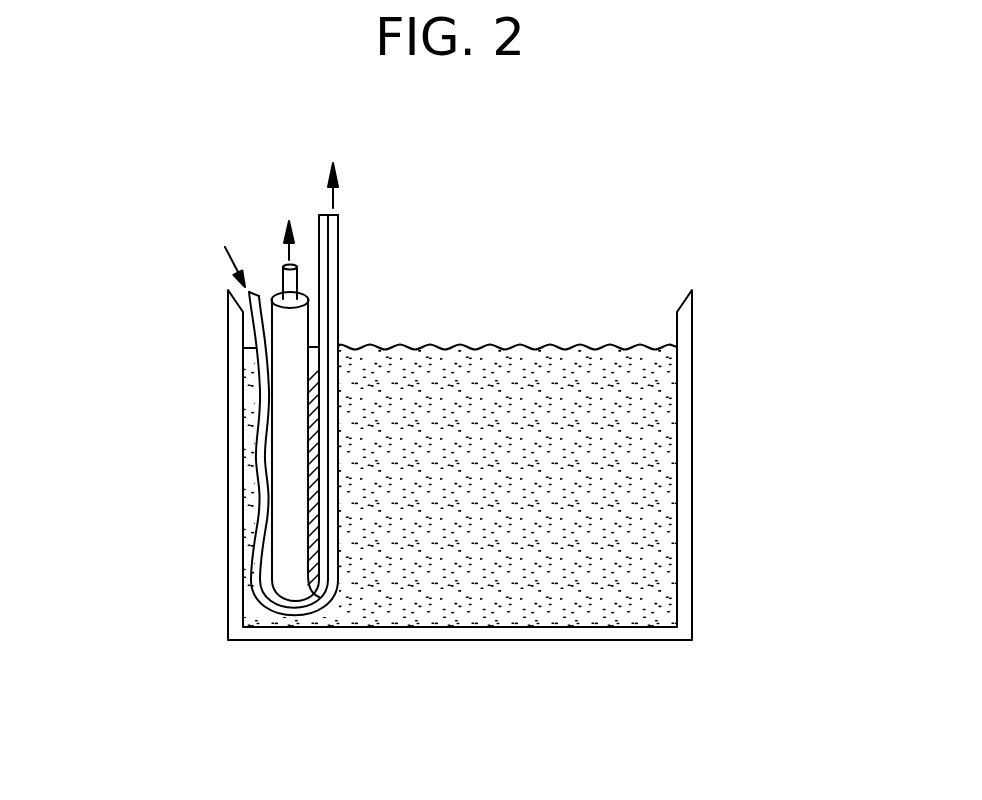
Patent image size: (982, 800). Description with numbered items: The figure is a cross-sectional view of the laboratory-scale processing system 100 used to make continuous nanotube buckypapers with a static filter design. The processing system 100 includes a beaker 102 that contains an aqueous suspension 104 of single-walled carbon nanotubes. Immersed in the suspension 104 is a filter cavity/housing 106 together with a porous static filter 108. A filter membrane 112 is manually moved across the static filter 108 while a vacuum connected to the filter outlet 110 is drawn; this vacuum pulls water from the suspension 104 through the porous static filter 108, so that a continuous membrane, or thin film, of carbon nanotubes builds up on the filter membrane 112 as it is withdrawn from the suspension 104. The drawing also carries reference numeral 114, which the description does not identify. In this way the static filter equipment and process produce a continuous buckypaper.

The processing system 100 is at (633, 238).
The beaker 102 is at (645, 633).
The aqueous suspension 104 is at (667, 465).
The filter cavity/housing 106 is at (287, 585).
The porous static filter 108 is at (317, 535).
The filter outlet 110 is at (285, 272).
The filter membrane 112 is at (325, 223).
The outlet tube 114 is at (333, 238).